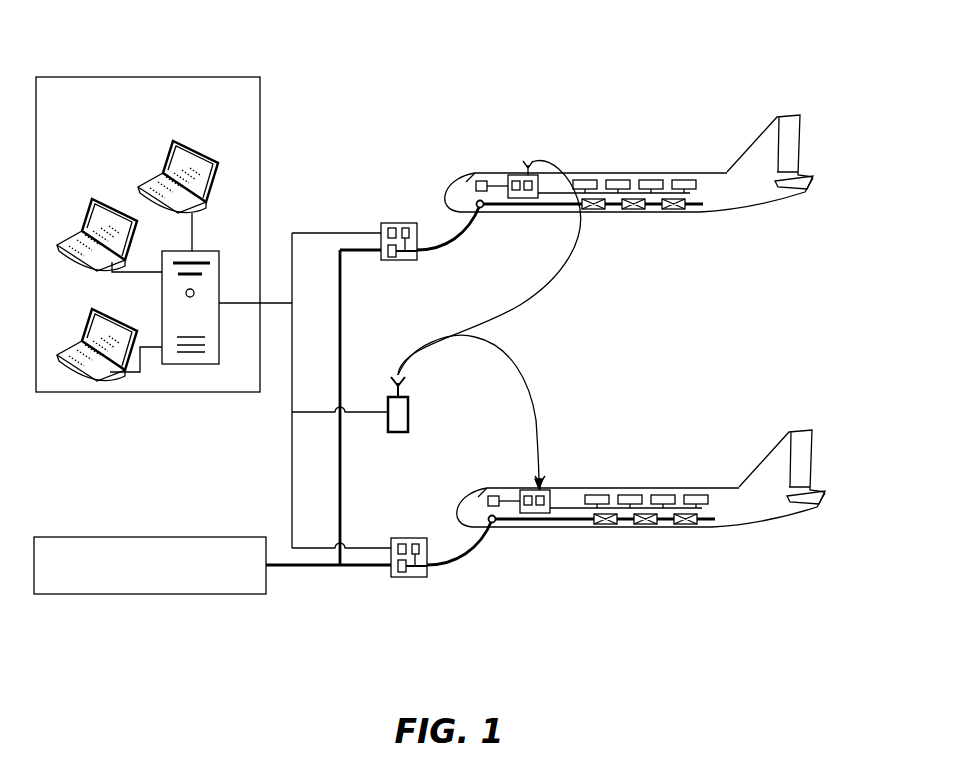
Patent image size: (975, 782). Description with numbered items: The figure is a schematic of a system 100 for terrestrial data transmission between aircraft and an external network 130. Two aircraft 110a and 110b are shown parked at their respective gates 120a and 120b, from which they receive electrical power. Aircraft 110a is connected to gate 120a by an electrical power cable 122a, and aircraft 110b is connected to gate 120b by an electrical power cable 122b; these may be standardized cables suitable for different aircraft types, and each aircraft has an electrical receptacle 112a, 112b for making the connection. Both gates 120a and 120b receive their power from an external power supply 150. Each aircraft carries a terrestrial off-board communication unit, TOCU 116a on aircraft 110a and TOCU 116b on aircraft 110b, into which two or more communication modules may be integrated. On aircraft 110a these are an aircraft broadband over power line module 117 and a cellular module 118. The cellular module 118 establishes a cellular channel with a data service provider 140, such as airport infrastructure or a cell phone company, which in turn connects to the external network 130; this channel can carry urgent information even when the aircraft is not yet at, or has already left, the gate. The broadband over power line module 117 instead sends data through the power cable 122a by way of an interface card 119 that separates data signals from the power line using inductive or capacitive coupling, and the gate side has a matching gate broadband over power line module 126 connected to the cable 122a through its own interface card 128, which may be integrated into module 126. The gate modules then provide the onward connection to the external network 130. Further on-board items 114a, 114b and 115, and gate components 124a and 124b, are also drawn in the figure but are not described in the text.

The system 100 is at (778, 62).
The aircraft 110a is at (762, 196).
The aircraft 110b is at (773, 530).
The electrical receptacle 112a is at (483, 208).
The electrical receptacle 112b is at (494, 521).
The first aircraft electrical loads 114a is at (600, 210).
The second aircraft electrical loads 114b is at (612, 526).
The aircraft data systems 115 is at (590, 180).
The terrestrial off-board communication unit 116a is at (507, 175).
The terrestrial off-board communication unit 116b is at (518, 491).
The aircraft broadband over power line module 117 is at (516, 178).
The cellular module 118 is at (532, 162).
The interface card 119 is at (475, 178).
The gate 120a is at (376, 242).
The gate 120b is at (398, 610).
The electrical power cable 122a is at (450, 243).
The electrical power cable 122b is at (482, 566).
The first power interface 124a is at (391, 260).
The second power interface 124b is at (400, 578).
The gate broadband over power line module 126 is at (382, 226).
The interface card 128 is at (403, 226).
The external network 130 is at (148, 234).
The data service provider 140 is at (397, 433).
The external power supply 150 is at (150, 565).